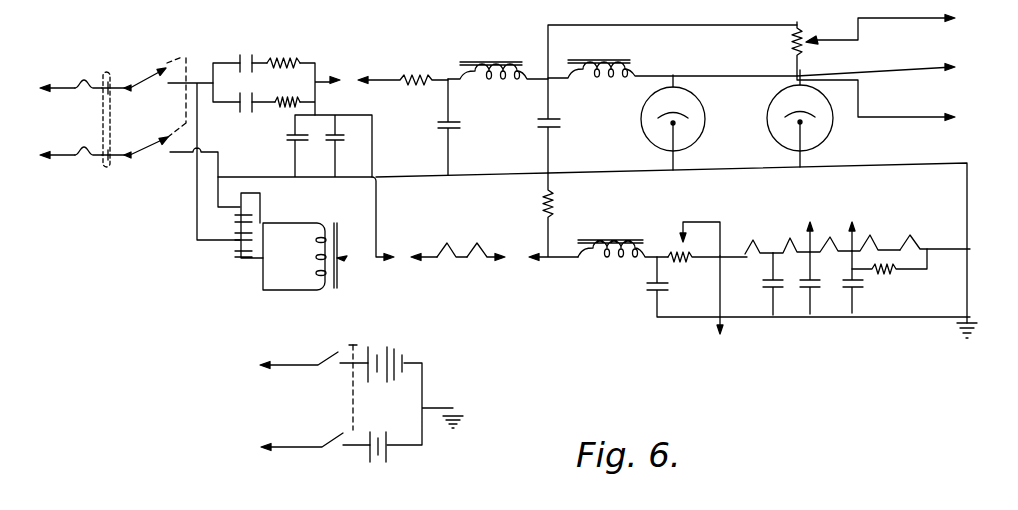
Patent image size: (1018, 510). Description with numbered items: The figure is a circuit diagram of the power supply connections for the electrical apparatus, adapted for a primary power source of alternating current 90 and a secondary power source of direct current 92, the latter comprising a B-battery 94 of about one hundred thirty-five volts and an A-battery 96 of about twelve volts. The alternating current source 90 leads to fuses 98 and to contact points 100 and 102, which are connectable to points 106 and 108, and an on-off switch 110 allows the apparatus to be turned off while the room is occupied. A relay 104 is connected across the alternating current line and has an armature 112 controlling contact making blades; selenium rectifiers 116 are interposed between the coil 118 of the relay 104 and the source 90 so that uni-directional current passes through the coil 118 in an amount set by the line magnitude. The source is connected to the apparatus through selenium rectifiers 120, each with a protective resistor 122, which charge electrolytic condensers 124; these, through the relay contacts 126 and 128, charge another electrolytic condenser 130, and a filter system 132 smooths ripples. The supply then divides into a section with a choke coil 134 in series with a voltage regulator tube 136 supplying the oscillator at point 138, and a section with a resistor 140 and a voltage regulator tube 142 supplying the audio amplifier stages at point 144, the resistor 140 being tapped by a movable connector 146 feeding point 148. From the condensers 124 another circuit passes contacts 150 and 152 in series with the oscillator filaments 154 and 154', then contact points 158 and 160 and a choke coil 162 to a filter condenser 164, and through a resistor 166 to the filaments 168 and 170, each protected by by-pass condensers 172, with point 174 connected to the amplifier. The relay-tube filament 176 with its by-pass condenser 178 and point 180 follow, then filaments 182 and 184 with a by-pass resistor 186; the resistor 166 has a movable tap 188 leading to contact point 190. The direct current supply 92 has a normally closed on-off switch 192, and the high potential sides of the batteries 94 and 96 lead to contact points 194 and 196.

The primary power source of alternating current 90 is at (58, 124).
The secondary power source of direct current 92 is at (424, 364).
The B-battery 94 is at (380, 352).
The A-battery 96 is at (380, 462).
The fuses 98 is at (83, 93).
The contact point 100 is at (110, 86).
The contact point 102 is at (112, 162).
The relay 104 is at (340, 258).
The point 106 is at (125, 91).
The point 108 is at (131, 158).
The on-off switch 110 is at (186, 58).
The armature 112 is at (339, 233).
The selenium rectifiers 116 is at (235, 226).
The coil 118 is at (316, 278).
The selenium rectifiers 120 is at (247, 97).
The protective resistor 122 is at (282, 70).
The electrolytic condensers 124 is at (327, 151).
The relay contact 126 is at (342, 76).
The relay contact 128 is at (365, 78).
The electrolytic condenser 130 is at (455, 130).
The filter system 132 is at (512, 81).
The choke coil 134 is at (600, 78).
The voltage regulator tube 136 is at (693, 106).
The point 138 is at (955, 71).
The resistor 140 is at (790, 48).
The voltage regulator tube 142 is at (820, 135).
The point 144 is at (955, 120).
The movable connector 146 is at (813, 36).
The point 148 is at (955, 22).
The contact 150 is at (390, 254).
The contact 152 is at (418, 260).
The filament 154 is at (454, 238).
The filament 154' is at (492, 236).
The contact point 158 is at (500, 260).
The contact point 160 is at (535, 260).
The choke coil 162 is at (600, 247).
The filter condenser 164 is at (650, 292).
The resistor 166 is at (683, 259).
The filament 168 is at (751, 242).
The filament 170 is at (788, 240).
The by-pass condensers 172 is at (807, 288).
The point 174 is at (812, 225).
The filament 176 is at (834, 247).
The by-pass condenser 178 is at (860, 290).
The point 180 is at (855, 224).
The filament 182 is at (877, 236).
The filament 184 is at (913, 239).
The by-pass resistor 186 is at (887, 272).
The movable tap 188 is at (678, 238).
The contact point 190 is at (721, 330).
The on-off switch 192 is at (327, 352).
The contact point 194 is at (270, 349).
The contact point 196 is at (271, 432).